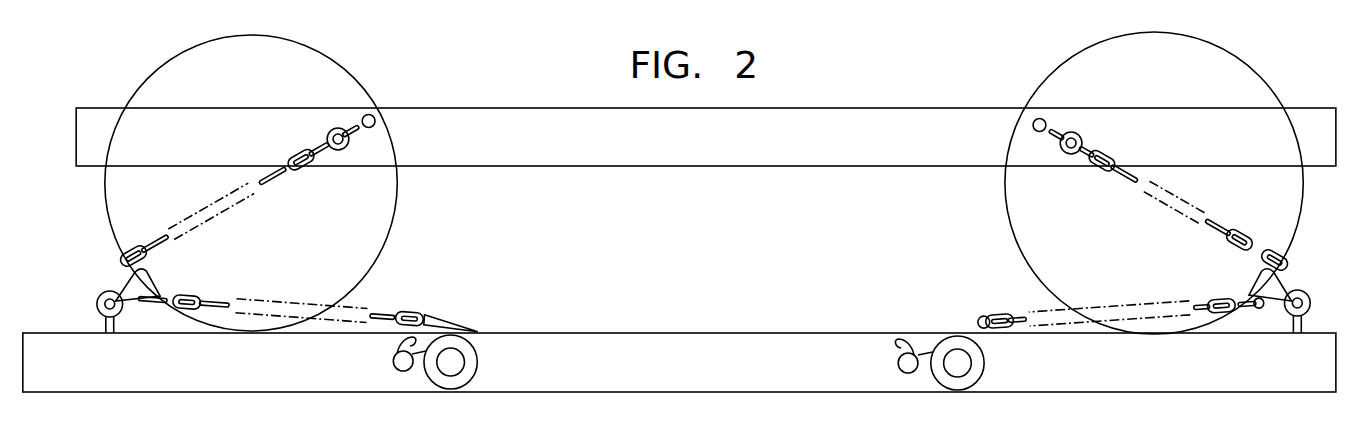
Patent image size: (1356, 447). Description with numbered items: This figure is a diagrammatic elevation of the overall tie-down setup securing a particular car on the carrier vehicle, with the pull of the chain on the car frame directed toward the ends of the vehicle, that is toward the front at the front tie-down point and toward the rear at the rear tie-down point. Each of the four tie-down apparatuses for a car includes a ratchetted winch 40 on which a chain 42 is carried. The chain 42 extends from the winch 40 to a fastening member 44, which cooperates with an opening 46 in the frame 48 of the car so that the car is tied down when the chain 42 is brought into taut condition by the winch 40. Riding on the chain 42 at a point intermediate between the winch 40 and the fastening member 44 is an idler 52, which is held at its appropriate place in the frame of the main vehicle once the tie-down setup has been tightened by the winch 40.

The ratchetted winch 40 is at (431, 382).
The chain 42 is at (125, 245).
The fastening member 44 is at (343, 129).
The opening 46 is at (365, 111).
The frame 48 is at (781, 105).
The idler 52 is at (114, 284).